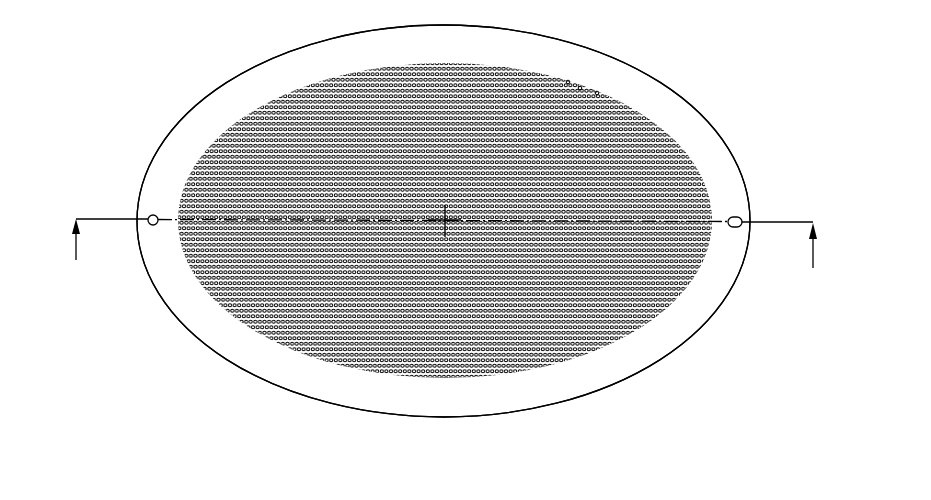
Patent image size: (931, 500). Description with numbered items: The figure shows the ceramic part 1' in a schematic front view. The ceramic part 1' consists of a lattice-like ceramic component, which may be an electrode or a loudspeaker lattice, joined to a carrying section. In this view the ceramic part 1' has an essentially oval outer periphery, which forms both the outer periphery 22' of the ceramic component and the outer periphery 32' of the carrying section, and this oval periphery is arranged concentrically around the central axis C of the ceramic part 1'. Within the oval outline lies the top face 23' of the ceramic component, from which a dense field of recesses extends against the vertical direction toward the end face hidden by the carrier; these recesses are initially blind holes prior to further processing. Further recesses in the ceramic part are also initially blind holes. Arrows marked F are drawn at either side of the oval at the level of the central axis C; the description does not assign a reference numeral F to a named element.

The ceramic part 1' is at (433, 259).
The outer periphery of the ceramic component 22' is at (466, 221).
The outer periphery of the carrying section 32' is at (466, 221).
The top face of the ceramic component 23' is at (457, 221).
The central axis C is at (445, 232).
The force direction F is at (433, 244).